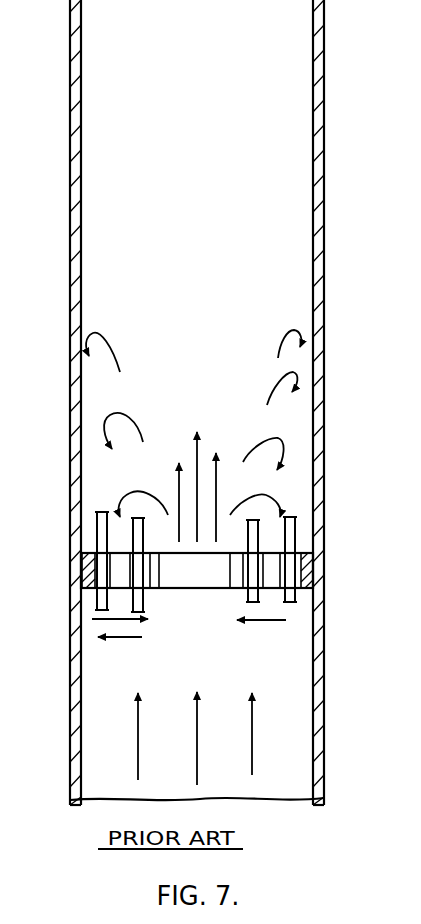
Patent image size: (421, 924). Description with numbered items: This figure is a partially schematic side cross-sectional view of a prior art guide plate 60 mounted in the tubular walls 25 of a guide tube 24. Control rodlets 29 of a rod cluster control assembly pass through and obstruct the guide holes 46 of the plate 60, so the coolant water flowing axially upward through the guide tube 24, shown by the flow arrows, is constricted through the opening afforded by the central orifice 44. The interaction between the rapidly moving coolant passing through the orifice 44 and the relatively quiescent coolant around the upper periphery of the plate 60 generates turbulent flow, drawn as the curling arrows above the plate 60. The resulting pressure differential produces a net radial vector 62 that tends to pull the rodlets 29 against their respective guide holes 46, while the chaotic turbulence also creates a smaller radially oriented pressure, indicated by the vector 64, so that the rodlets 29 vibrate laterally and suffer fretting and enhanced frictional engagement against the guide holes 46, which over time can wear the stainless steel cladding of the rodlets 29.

The guide tube 24 is at (172, 220).
The tubular wall 25 is at (324, 317).
The control rodlet 29 is at (133, 529).
The central orifice 44 is at (180, 577).
The guide hole 46 is at (97, 606).
The prior art guide plate 60 is at (311, 550).
The net radial vector 62 is at (128, 620).
The radially oriented pressure vector 64 is at (127, 639).